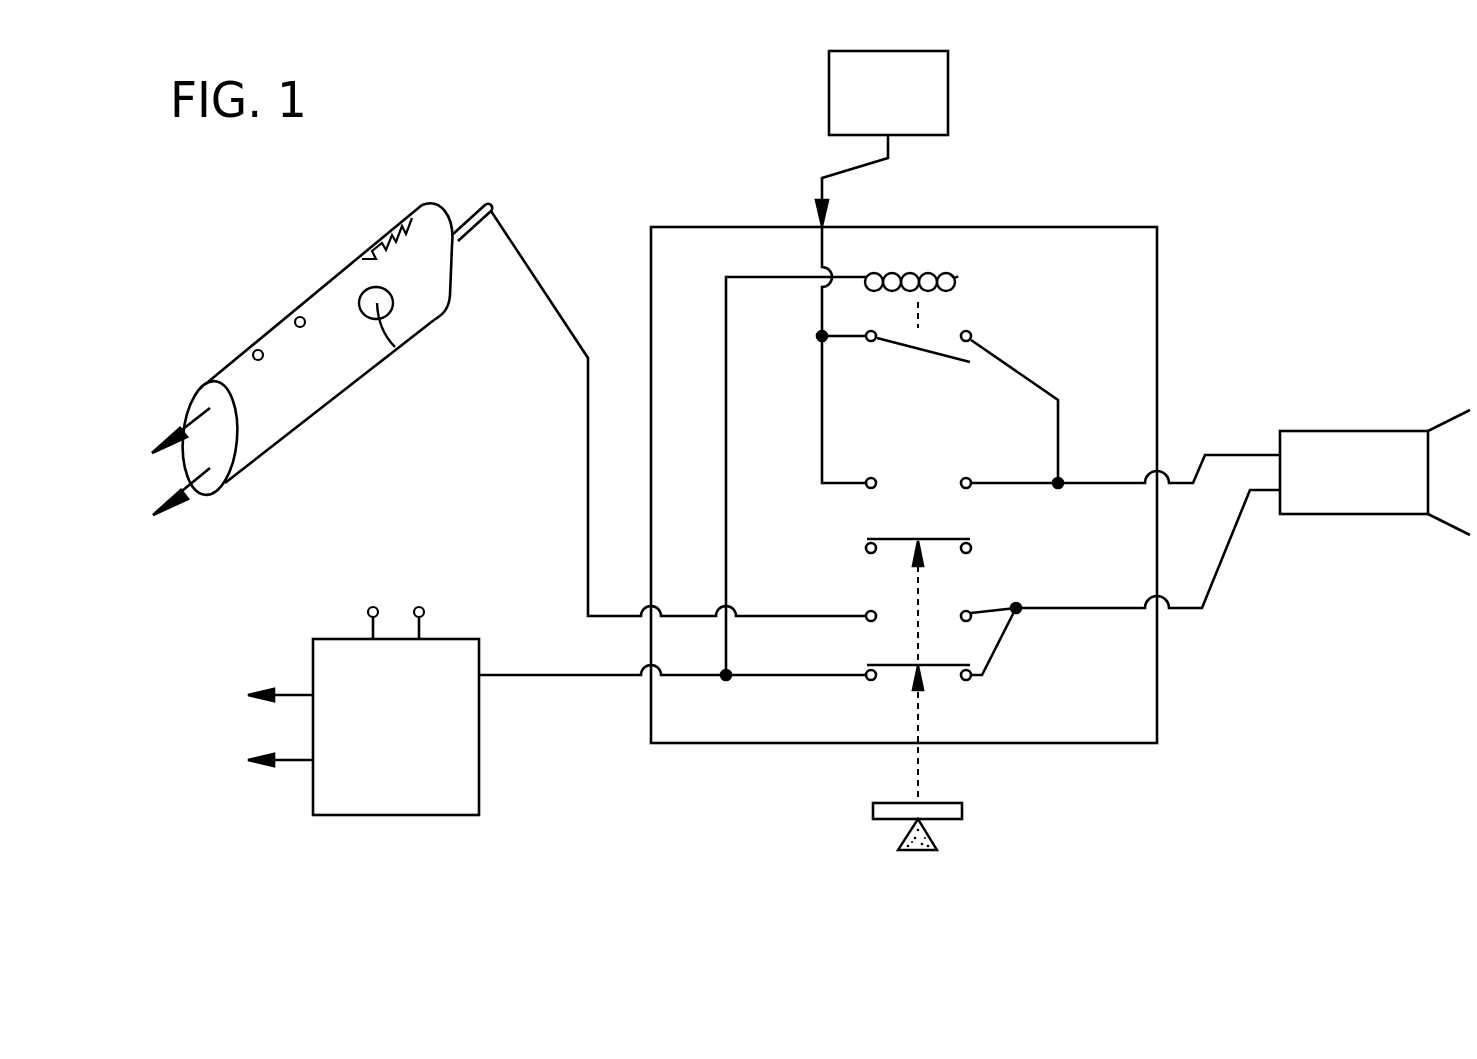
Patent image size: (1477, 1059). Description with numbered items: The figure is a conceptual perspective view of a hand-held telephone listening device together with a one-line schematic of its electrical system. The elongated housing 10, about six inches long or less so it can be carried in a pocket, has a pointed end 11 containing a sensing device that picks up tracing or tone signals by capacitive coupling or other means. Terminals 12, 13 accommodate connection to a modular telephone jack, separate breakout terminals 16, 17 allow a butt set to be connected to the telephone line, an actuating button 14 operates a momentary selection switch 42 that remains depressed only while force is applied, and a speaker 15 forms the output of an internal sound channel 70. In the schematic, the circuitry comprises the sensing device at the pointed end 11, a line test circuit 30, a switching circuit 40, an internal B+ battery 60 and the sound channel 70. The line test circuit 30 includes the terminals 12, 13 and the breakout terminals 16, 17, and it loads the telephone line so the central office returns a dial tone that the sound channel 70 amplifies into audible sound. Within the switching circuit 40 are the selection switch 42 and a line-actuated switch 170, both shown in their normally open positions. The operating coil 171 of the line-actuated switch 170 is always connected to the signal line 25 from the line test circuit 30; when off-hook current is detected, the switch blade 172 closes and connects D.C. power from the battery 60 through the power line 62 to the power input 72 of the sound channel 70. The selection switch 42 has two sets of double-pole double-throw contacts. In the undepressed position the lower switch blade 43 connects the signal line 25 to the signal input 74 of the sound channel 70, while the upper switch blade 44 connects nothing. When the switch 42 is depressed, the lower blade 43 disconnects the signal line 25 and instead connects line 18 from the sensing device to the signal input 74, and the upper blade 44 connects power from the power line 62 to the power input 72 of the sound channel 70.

The housing 10 is at (325, 405).
The pointed end 11 is at (469, 222).
The terminal 12 is at (179, 432).
The terminal 13 is at (191, 487).
The actuating button 14 is at (398, 347).
The speaker 15 is at (388, 232).
The breakout terminal 16 is at (252, 350).
The breakout terminal 17 is at (298, 316).
The line 18 is at (585, 466).
The signal line 25 is at (569, 678).
The line test circuit 30 is at (481, 799).
The switching circuit 40 is at (1083, 212).
The selection switch 42 is at (1060, 684).
The lower switch blade 43 is at (896, 667).
The upper switch blade 44 is at (945, 538).
The battery 60 is at (948, 90).
The power line 62 is at (858, 163).
The sound channel 70 is at (1362, 430).
The power input 72 is at (1237, 452).
The signal input 74 is at (1225, 552).
The line-actuated switch 170 is at (1067, 309).
The operating coil 171 is at (928, 276).
The switch blade 172 is at (897, 343).